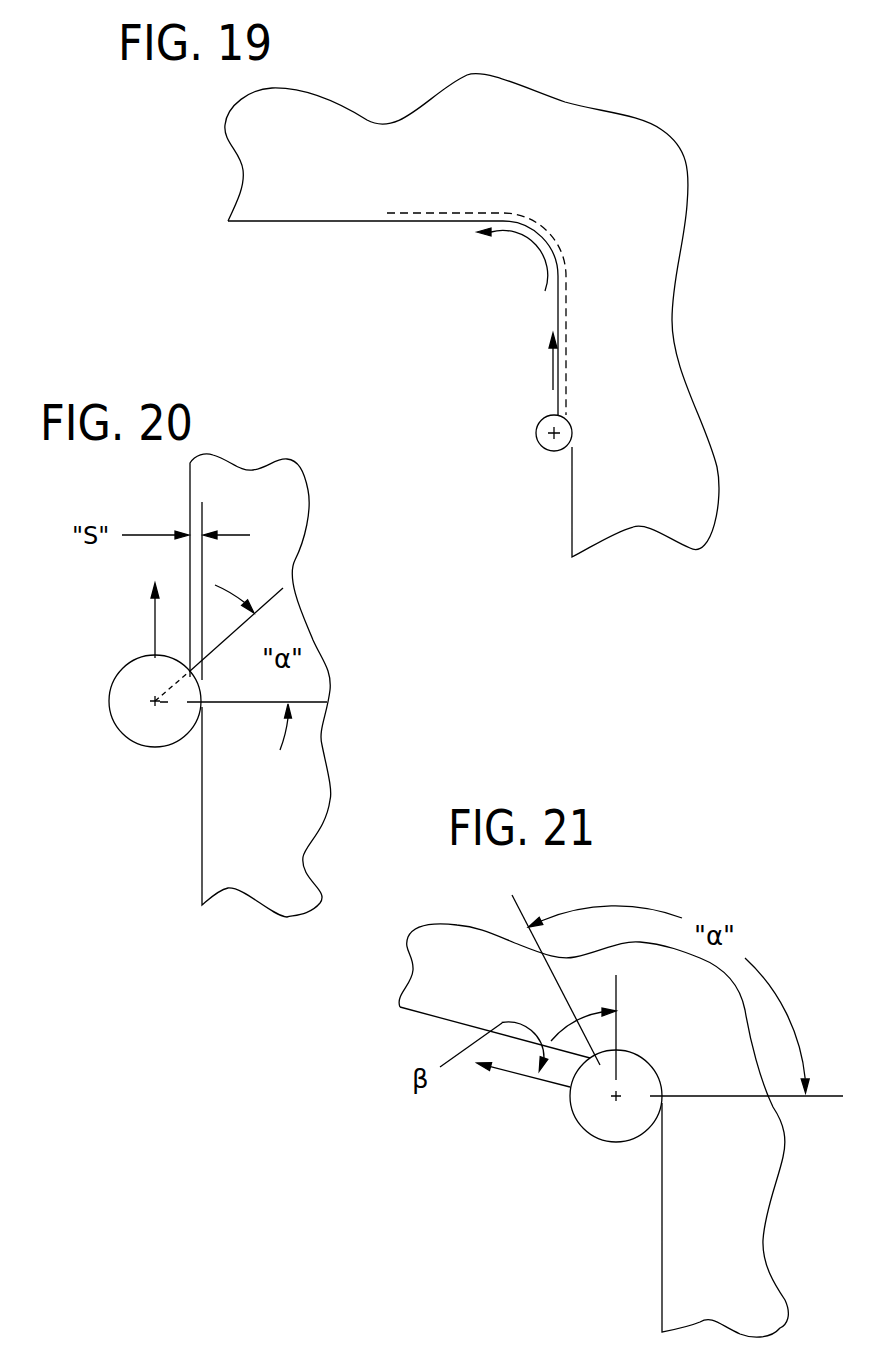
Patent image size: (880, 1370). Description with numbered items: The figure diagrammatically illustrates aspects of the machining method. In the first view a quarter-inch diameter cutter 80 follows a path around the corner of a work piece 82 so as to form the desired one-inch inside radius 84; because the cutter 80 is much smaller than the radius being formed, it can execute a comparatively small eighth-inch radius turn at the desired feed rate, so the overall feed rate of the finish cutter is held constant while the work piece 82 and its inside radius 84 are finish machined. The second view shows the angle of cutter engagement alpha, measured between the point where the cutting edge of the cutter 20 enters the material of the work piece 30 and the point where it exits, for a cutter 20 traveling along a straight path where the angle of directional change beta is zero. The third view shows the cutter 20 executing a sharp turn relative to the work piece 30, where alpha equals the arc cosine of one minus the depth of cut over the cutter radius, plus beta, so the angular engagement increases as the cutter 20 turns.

In FIG. 20, the cutter 20 is at (117, 730).
In FIG. 21, the cutter 20 is at (578, 1124).
In FIG. 20, the work piece 30 is at (270, 828).
In FIG. 21, the work piece 30 is at (734, 1228).
In FIG. 19, the cutter 80 is at (540, 446).
In FIG. 19, the work piece 82 is at (637, 407).
In FIG. 19, the inside radius 84 is at (547, 239).